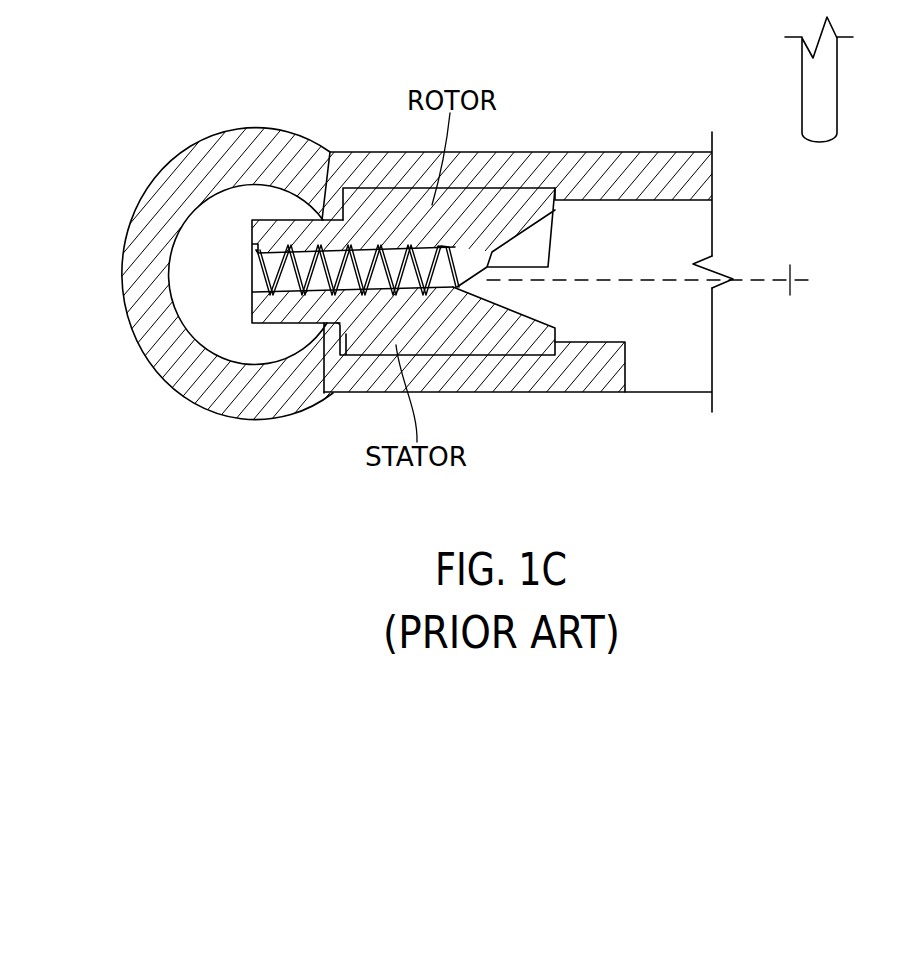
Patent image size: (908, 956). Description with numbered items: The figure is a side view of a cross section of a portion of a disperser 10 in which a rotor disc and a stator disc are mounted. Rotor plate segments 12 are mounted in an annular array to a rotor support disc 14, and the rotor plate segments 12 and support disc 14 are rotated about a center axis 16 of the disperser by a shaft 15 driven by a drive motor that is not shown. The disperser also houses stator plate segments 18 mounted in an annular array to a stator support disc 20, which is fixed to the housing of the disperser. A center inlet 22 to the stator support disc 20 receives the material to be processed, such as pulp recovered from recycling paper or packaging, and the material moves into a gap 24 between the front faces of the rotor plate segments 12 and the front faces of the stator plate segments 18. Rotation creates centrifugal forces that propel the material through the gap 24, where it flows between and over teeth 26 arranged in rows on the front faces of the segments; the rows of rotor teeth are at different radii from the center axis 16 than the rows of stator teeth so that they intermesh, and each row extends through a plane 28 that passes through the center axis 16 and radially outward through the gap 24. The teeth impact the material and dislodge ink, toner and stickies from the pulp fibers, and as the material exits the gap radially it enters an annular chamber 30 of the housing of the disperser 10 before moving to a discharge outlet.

The disperser 10 is at (531, 108).
The rotor plate segments 12 is at (553, 240).
The rotor support disc 14 is at (633, 160).
The shaft 15 is at (840, 87).
The center axis 16 is at (790, 268).
The stator plate segments 18 is at (360, 345).
The stator support disc 20 is at (552, 394).
The center inlet 22 is at (668, 410).
The gap 24 is at (249, 252).
The teeth 26 is at (337, 255).
The plane 28 is at (748, 270).
The annular chamber 30 is at (237, 207).